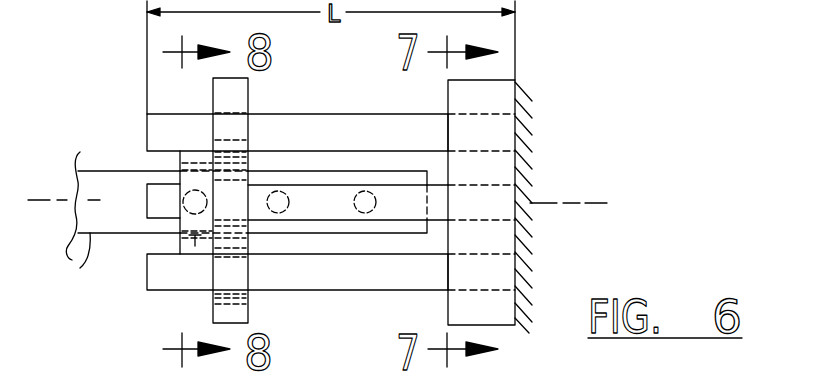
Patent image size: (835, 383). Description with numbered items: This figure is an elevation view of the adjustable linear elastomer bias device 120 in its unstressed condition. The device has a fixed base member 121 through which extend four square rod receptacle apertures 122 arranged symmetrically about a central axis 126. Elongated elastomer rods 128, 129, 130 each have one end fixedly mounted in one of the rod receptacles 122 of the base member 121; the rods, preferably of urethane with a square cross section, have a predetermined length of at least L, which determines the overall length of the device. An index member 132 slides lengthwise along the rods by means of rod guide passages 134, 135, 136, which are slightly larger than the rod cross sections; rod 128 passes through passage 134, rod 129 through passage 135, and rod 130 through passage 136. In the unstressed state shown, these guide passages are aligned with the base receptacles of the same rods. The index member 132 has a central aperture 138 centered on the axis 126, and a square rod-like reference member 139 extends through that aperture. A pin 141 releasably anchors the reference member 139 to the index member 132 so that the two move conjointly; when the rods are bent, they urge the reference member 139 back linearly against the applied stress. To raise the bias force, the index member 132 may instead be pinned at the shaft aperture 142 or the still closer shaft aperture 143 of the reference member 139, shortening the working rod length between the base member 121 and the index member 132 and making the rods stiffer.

The adjustable linear elastomer bias device 120 is at (356, 109).
The fixed base member 121 is at (515, 70).
The rod receptacle apertures 122 is at (500, 153).
The central axis 126 is at (37, 200).
The elongated elastomer rod 128 is at (273, 120).
The elongated elastomer rod 129 is at (415, 286).
The elongated elastomer rod 130 is at (160, 200).
The index member 132 is at (240, 97).
The rod guide passage 134 is at (232, 110).
The rod guide passage 135 is at (228, 296).
The rod guide passage 136 is at (228, 178).
The central aperture 138 is at (195, 248).
The reference member 139 is at (66, 265).
The pin 141 is at (184, 209).
The shaft aperture 142 is at (284, 211).
The shaft aperture 143 is at (372, 193).